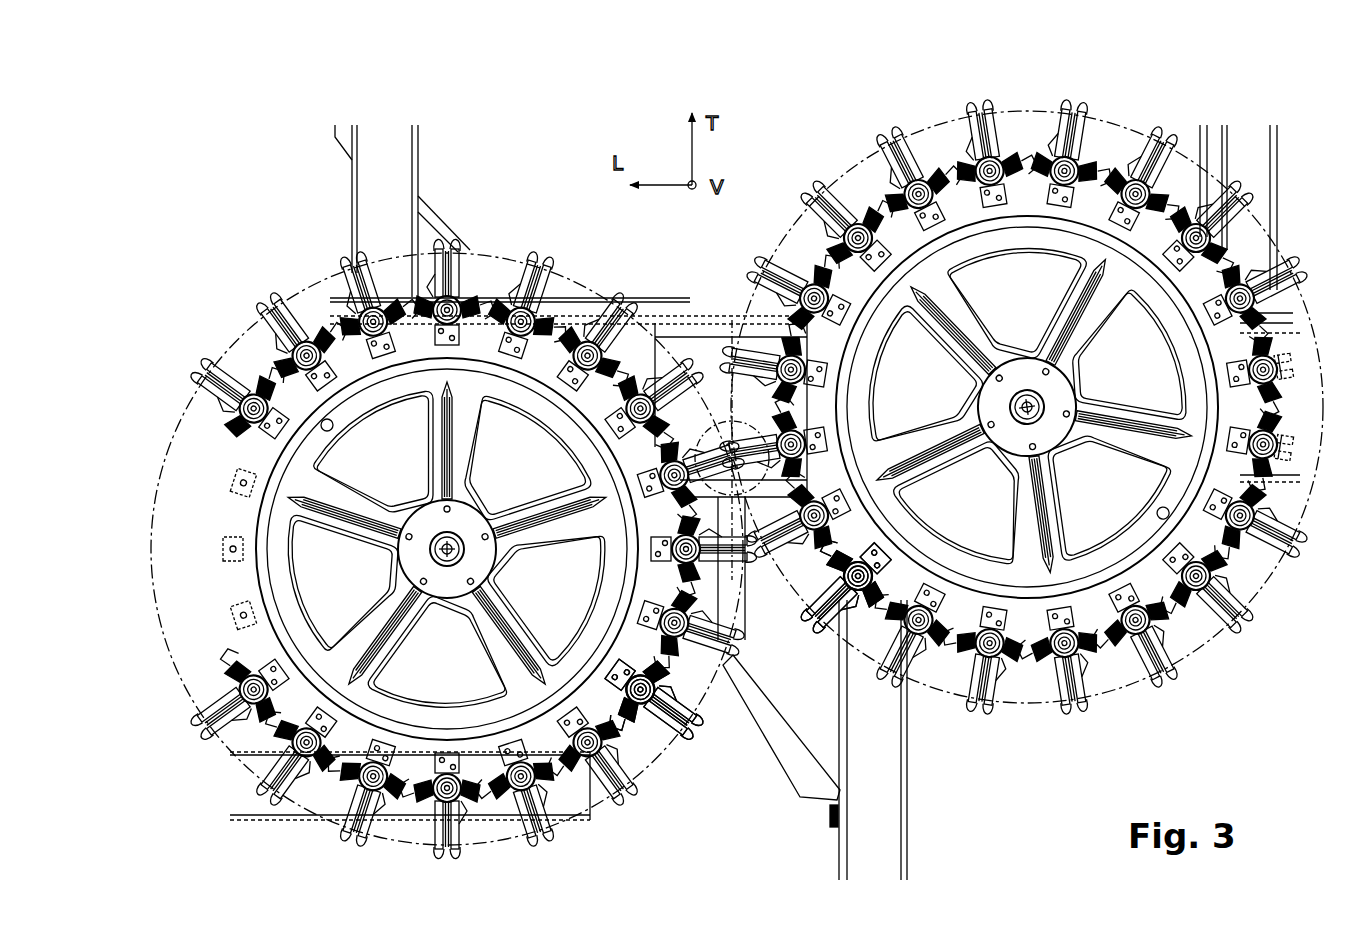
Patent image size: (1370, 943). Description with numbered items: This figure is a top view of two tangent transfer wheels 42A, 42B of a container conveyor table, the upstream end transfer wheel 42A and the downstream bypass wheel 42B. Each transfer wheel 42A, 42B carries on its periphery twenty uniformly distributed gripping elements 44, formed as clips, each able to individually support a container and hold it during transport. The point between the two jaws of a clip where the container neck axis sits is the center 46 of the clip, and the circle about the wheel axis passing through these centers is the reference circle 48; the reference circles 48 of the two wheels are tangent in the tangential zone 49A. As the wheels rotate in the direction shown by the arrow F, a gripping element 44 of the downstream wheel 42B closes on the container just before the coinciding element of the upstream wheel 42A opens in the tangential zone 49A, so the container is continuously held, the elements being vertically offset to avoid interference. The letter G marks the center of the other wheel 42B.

The transfer wheel 42A is at (1070, 580).
The transfer wheel 42B is at (541, 700).
The gripping element 44 is at (1150, 137).
The center of the clip 46 is at (817, 625).
The reference circle 48 is at (790, 600).
The tangential zone 49A is at (714, 430).
The direction of rotation arrow F is at (1034, 414).
The rotation axis of second transfer wheel G is at (452, 557).